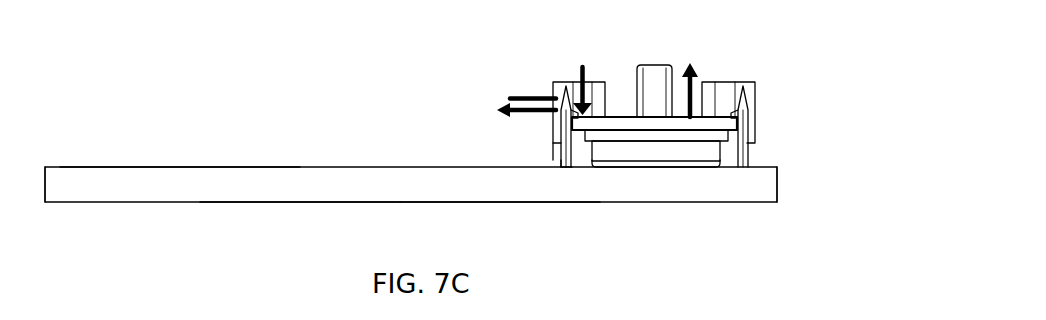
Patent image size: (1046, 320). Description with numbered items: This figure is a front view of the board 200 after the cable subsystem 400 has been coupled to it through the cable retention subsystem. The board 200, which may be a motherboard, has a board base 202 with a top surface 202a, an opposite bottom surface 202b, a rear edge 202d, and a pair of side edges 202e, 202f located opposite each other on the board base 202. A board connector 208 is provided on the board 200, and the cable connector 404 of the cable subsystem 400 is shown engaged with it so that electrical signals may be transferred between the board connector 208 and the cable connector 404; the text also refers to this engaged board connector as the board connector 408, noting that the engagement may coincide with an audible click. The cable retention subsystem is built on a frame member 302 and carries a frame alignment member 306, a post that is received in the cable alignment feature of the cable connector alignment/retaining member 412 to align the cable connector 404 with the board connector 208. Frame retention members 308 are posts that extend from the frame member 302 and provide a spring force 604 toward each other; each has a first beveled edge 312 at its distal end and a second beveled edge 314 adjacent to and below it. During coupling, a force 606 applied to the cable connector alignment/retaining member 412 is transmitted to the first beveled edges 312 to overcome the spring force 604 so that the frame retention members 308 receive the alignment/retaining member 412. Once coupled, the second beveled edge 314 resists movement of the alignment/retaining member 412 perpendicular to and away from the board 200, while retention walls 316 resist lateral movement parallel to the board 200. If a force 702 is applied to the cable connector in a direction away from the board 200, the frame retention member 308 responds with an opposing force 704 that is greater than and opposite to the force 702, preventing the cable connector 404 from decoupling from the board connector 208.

The board 200 is at (170, 113).
The board base 202 is at (777, 167).
The top surface 202a is at (312, 167).
The bottom surface 202b is at (550, 203).
The rear edge 202d is at (280, 182).
The side edge 202e is at (47, 167).
The side edge 202f is at (777, 189).
The board connector 208 is at (655, 167).
The frame member 302 is at (556, 161).
The frame alignment member 306 is at (660, 66).
The frame retention member 308 is at (558, 150).
The first beveled edge 312 is at (567, 87).
The second beveled edge 314 is at (572, 112).
The retention wall 316 is at (553, 135).
The cable subsystem 400 is at (732, 82).
The cable connector 404 is at (657, 162).
The board connector 408 is at (750, 117).
The cable connector alignment/retaining member 412 is at (717, 82).
The spring force 604 is at (530, 97).
The force 606 is at (500, 108).
The force 702 is at (688, 64).
The opposing force 704 is at (582, 67).